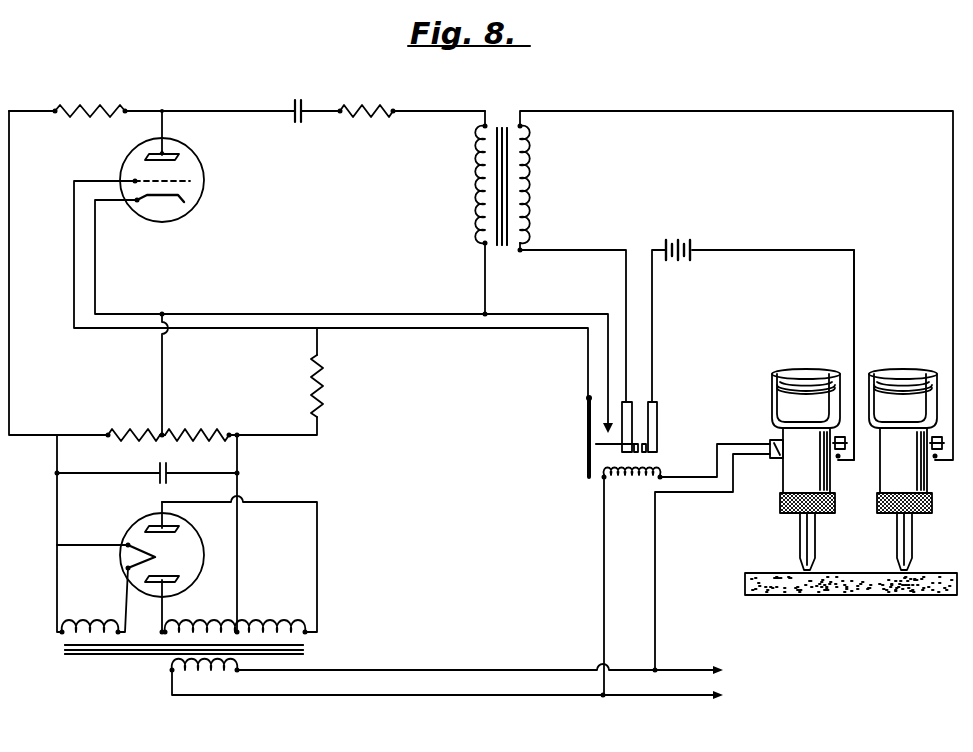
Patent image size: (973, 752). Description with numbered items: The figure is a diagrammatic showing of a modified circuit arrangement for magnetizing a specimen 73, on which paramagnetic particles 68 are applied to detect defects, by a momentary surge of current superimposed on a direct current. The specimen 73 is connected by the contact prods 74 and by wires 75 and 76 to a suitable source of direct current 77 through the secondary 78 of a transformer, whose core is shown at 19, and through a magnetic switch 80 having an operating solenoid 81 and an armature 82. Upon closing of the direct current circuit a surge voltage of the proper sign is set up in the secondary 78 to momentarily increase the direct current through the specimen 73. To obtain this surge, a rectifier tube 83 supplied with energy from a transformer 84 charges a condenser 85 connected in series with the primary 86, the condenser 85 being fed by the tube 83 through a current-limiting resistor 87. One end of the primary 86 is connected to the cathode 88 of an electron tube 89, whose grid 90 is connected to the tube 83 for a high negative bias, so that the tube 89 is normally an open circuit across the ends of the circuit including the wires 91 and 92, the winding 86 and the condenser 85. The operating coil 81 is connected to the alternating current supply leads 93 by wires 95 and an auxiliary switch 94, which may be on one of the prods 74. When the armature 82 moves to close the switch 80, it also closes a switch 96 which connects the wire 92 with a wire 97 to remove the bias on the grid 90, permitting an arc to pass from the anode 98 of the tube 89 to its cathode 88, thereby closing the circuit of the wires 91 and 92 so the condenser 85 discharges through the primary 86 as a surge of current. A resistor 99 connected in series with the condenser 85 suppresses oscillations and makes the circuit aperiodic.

The current-limiting resistor 87 is at (90, 109).
The condenser 85 is at (296, 107).
The resistor 99 is at (377, 116).
The wire 91 is at (450, 110).
The primary 86 is at (482, 184).
The secondary 78 is at (527, 182).
The transformer core 19 is at (503, 246).
The wire 75 is at (821, 114).
The source of direct current 77 is at (700, 250).
The wire 76 is at (852, 334).
The wire 92 is at (426, 313).
The wire 97 is at (447, 332).
The anode 98 is at (178, 156).
The grid 90 is at (135, 170).
The electron tube 89 is at (205, 182).
The cathode 88 is at (167, 197).
The rectifier tube 83 is at (128, 528).
The transformer 84 is at (65, 648).
The switch 96 is at (598, 414).
The magnetic switch 80 is at (640, 422).
The armature 82 is at (604, 448).
The operating solenoid 81 is at (630, 478).
The wires 95 is at (697, 493).
The auxiliary switch 94 is at (775, 462).
The contact prods 74 is at (814, 570).
The paramagnetic particles 68 is at (845, 590).
The specimen 73 is at (945, 597).
The alternating current supply leads 93 is at (683, 668).